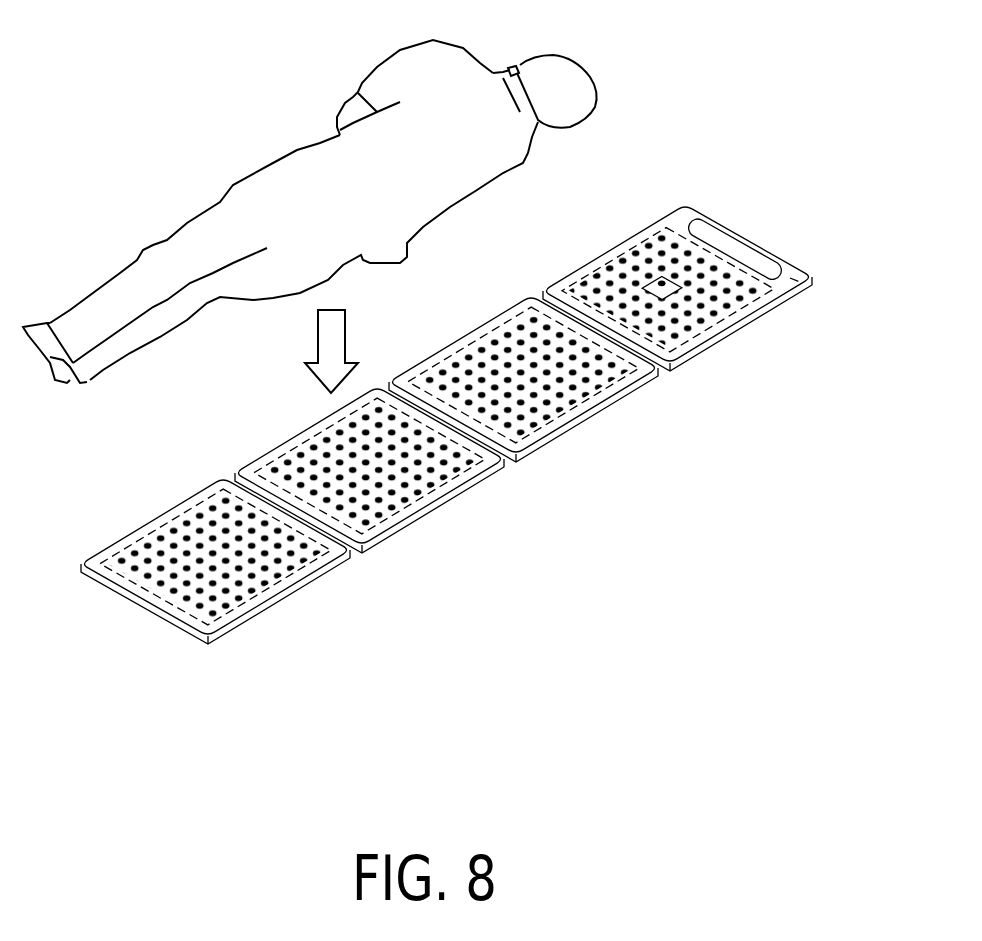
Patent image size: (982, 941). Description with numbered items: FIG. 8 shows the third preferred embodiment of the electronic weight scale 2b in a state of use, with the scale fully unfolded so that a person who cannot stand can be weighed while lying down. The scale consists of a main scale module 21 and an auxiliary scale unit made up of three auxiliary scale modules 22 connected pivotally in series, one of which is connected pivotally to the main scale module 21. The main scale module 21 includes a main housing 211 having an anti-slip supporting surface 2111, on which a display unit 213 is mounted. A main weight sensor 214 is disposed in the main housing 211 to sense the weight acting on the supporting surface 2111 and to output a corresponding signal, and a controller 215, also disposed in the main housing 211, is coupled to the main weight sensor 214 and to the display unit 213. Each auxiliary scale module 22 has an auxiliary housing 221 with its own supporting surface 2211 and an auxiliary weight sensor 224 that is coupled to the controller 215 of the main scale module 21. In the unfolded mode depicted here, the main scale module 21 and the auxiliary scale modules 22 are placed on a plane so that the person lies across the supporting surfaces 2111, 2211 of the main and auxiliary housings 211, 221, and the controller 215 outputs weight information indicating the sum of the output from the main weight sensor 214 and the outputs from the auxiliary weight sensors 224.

The electronic weight scale 2b is at (845, 65).
The main scale module 21 is at (716, 280).
The main housing 211 is at (783, 293).
The display unit 213 is at (728, 230).
The main weight sensor 214 is at (790, 278).
The controller 215 is at (676, 301).
The supporting surface 2111 is at (600, 257).
The auxiliary scale module 22 is at (419, 479).
The auxiliary housing 221 is at (597, 413).
The auxiliary weight sensor 224 is at (563, 437).
The supporting surface 2211 is at (447, 347).